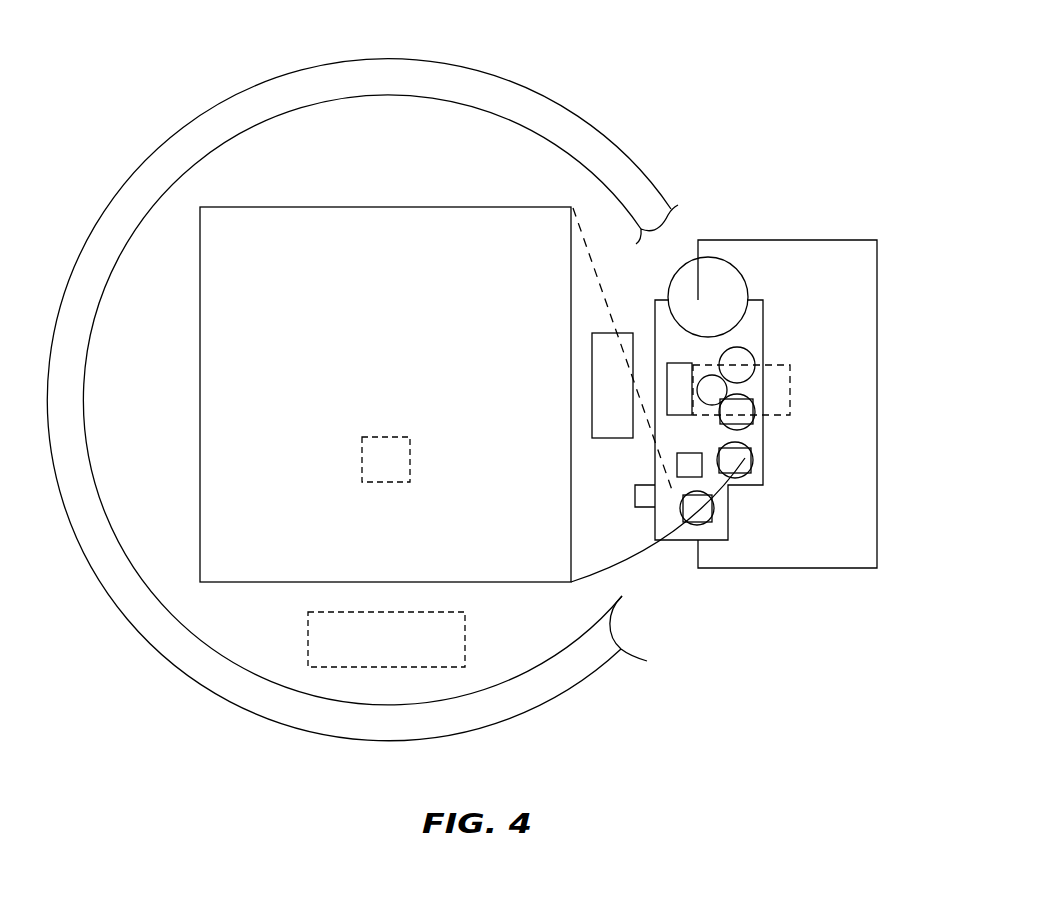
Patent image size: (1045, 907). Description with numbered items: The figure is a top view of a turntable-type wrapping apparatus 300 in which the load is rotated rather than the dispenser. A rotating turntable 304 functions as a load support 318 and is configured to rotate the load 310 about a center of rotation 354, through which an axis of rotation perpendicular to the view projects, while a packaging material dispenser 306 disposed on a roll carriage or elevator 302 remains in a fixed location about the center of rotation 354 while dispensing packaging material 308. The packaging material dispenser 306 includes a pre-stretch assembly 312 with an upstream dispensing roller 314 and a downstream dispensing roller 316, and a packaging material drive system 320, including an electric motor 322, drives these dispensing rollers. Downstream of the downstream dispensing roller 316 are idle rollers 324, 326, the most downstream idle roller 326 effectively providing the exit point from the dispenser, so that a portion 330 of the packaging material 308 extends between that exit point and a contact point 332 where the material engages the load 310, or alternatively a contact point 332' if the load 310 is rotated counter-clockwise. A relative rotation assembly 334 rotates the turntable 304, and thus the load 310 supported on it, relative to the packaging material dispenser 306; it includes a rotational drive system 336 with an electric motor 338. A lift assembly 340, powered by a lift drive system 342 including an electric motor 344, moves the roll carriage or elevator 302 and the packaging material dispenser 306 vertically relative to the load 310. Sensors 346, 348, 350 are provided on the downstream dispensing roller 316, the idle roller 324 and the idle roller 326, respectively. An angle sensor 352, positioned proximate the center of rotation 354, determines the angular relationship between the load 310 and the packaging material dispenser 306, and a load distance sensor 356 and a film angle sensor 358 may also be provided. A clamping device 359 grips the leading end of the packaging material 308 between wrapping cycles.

The turntable-type wrapping apparatus 300 is at (185, 95).
The roll carriage or elevator 302 is at (757, 358).
The turntable 304 is at (375, 98).
The packaging material dispenser 306 is at (740, 342).
The packaging material 308 is at (688, 263).
The load 310 is at (388, 207).
The pre-stretch assembly 312 is at (790, 368).
The upstream dispensing roller 314 is at (750, 383).
The downstream dispensing roller 316 is at (793, 385).
The load support 318 is at (133, 532).
The packaging material drive system 320 is at (670, 345).
The electric motor 322 is at (672, 378).
The idle roller 324 is at (733, 462).
The idle roller 326 is at (697, 473).
The portion of packaging material 330 is at (675, 497).
The contact point 332 is at (627, 520).
The contact point 332' is at (591, 329).
The relative rotation assembly 334 is at (473, 635).
The rotational drive system 336 is at (303, 640).
The electric motor 338 is at (360, 650).
The lift assembly 340 is at (798, 396).
The lift drive system 342 is at (800, 407).
The electric motor 344 is at (803, 415).
The sensor 346 is at (735, 414).
The sensor 348 is at (750, 476).
The sensor 350 is at (713, 525).
The angle sensor 352 is at (385, 483).
The center of rotation 354 is at (385, 437).
The load distance sensor 356 is at (716, 505).
The film angle sensor 358 is at (638, 495).
The clamping device 359 is at (605, 388).